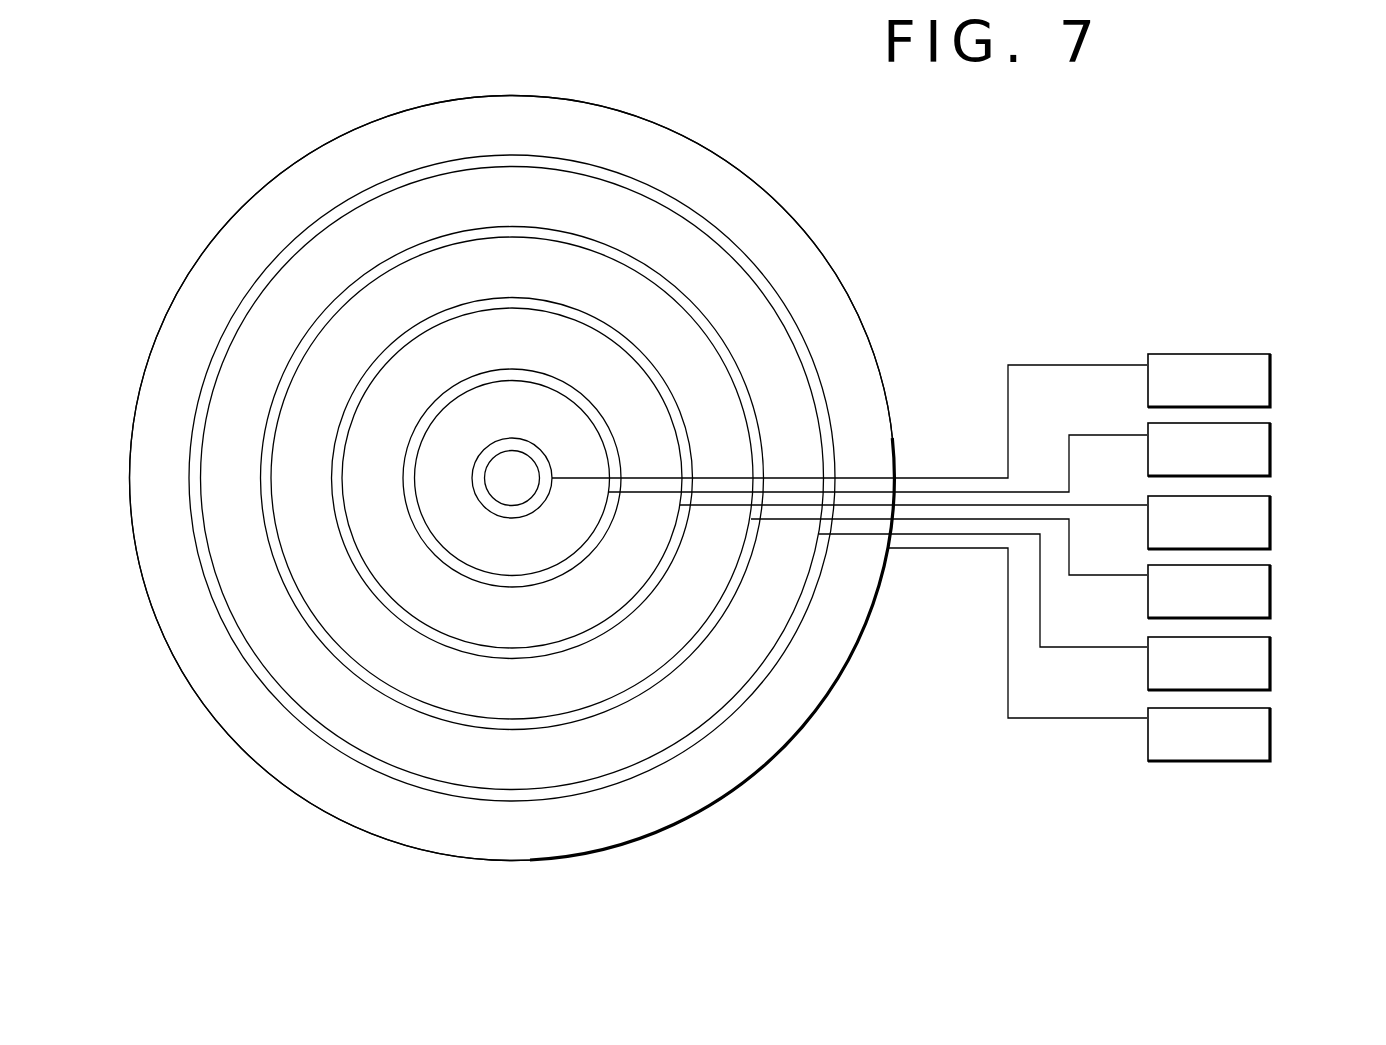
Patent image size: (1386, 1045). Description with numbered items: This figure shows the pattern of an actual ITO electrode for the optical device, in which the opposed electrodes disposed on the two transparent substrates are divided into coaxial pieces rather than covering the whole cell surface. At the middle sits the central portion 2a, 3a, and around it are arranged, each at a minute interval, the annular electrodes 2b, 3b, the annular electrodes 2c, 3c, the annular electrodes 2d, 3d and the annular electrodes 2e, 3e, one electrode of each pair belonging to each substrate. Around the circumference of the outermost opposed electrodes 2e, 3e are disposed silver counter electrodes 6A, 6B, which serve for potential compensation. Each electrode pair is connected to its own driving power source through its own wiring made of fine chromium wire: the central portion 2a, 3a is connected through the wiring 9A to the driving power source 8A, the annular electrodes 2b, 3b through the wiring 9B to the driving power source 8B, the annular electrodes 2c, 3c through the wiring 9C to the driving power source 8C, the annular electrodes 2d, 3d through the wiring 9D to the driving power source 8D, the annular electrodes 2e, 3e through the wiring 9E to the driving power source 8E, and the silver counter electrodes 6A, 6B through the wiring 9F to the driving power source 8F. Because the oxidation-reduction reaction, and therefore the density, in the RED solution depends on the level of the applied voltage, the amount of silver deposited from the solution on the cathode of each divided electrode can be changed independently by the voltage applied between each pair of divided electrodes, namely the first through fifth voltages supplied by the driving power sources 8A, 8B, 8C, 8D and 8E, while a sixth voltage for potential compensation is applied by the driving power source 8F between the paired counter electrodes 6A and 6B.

The silver counter electrode 6A is at (512, 478).
The silver counter electrode 6B is at (512, 478).
The annular electrode 2e is at (512, 478).
The annular electrode 3e is at (512, 478).
The annular electrode 2d is at (512, 478).
The annular electrode 3d is at (512, 478).
The annular electrode 2c is at (512, 478).
The annular electrode 3c is at (512, 478).
The annular electrode 2b is at (512, 478).
The annular electrode 3b is at (512, 478).
The central portion 2a is at (512, 478).
The central portion 3a is at (512, 479).
The wiring 9A is at (1035, 365).
The wiring 9B is at (1090, 435).
The wiring 9C is at (1117, 505).
The wiring 9D is at (1110, 575).
The wiring 9E is at (1081, 647).
The wiring 9F is at (1048, 718).
The driving power source 8A is at (1271, 380).
The driving power source 8B is at (1271, 449).
The driving power source 8C is at (1271, 522).
The driving power source 8D is at (1271, 591).
The driving power source 8E is at (1271, 663).
The driving power source 8F is at (1271, 734).